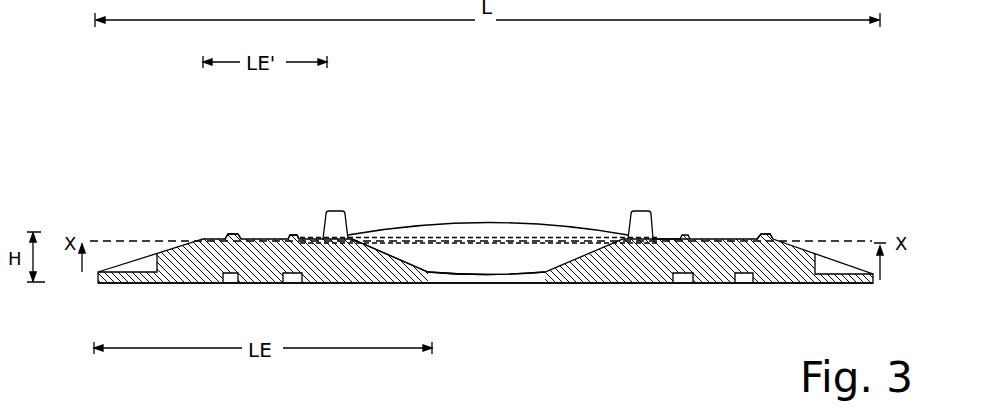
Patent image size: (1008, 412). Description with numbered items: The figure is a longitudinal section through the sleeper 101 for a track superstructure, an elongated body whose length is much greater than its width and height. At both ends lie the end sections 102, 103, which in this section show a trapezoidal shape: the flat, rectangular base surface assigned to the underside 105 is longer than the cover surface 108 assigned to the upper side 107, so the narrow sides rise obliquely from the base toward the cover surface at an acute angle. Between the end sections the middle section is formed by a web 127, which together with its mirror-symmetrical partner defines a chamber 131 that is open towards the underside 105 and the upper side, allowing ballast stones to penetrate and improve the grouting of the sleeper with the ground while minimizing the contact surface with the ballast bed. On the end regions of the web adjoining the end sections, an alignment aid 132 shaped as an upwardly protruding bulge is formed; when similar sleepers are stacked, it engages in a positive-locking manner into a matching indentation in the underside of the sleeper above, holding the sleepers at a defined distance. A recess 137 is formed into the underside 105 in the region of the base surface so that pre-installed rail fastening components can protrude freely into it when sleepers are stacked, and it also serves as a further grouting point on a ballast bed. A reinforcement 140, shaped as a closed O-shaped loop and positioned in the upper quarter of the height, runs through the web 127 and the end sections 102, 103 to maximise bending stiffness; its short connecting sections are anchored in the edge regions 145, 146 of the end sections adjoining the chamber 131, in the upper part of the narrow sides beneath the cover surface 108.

The sleeper 101 is at (243, 190).
The end section 102 is at (265, 284).
The end section 103 is at (640, 286).
The underside 105 is at (418, 303).
The upper side 107 is at (560, 231).
The cover surface 108 is at (227, 232).
The web 127 is at (440, 223).
The chamber 131 is at (490, 266).
The alignment aid 132 is at (338, 210).
The recess 137 is at (232, 284).
The reinforcement 140 is at (318, 237).
The edge region 145 is at (330, 252).
The edge region 146 is at (664, 236).